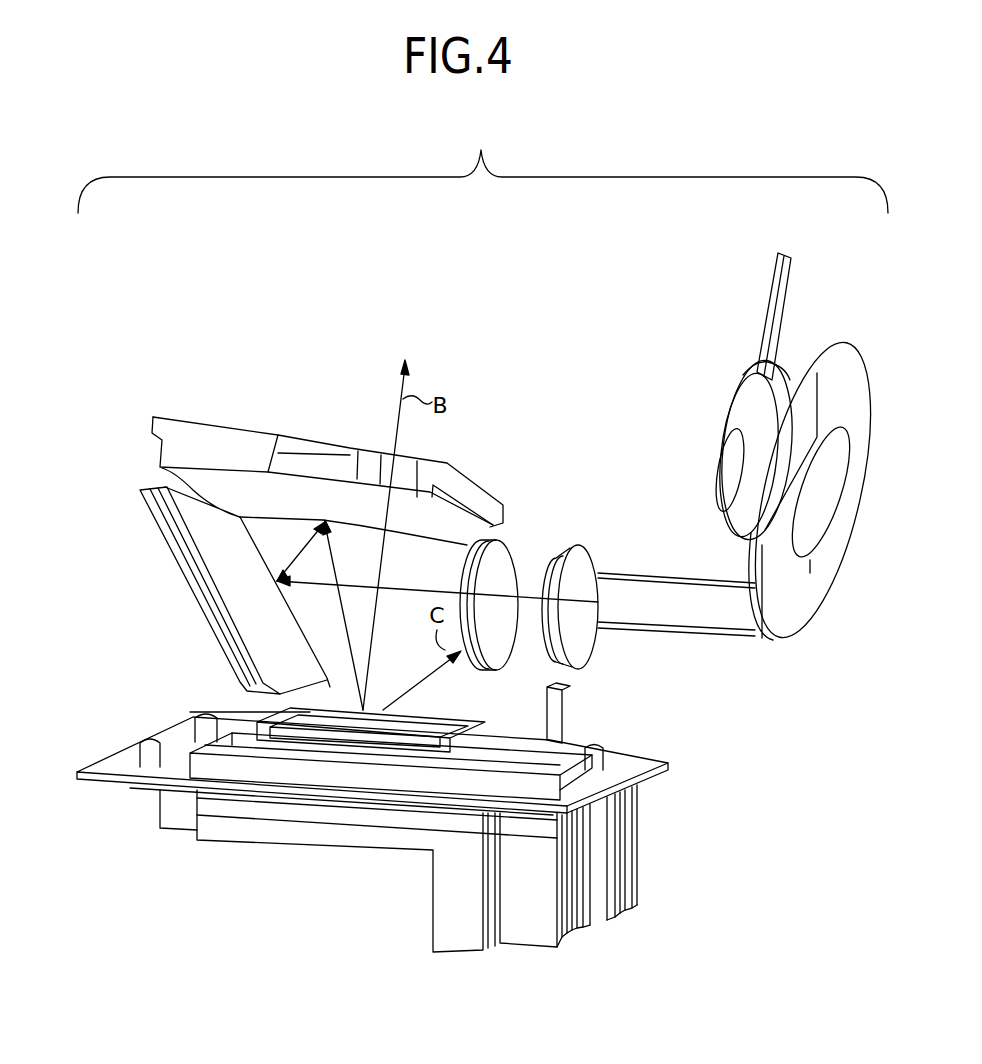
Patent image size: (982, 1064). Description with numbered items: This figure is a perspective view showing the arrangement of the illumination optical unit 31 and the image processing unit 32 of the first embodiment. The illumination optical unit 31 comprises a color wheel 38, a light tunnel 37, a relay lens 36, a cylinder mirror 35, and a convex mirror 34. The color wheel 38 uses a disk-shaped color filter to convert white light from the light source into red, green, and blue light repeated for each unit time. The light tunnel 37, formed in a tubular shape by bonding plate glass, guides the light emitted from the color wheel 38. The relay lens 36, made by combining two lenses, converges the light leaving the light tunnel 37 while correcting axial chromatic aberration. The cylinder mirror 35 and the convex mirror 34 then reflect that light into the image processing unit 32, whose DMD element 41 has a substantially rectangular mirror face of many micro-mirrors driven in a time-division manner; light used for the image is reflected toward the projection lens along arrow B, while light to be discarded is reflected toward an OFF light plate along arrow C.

The illumination optical unit 31 is at (480, 152).
The image processing unit 32 is at (311, 868).
The convex mirror 34 is at (208, 388).
The cylinder mirror 35 is at (153, 556).
The relay lens 36 is at (497, 560).
The light tunnel 37 is at (628, 549).
The color wheel 38 is at (809, 299).
The DMD element 41 is at (323, 710).